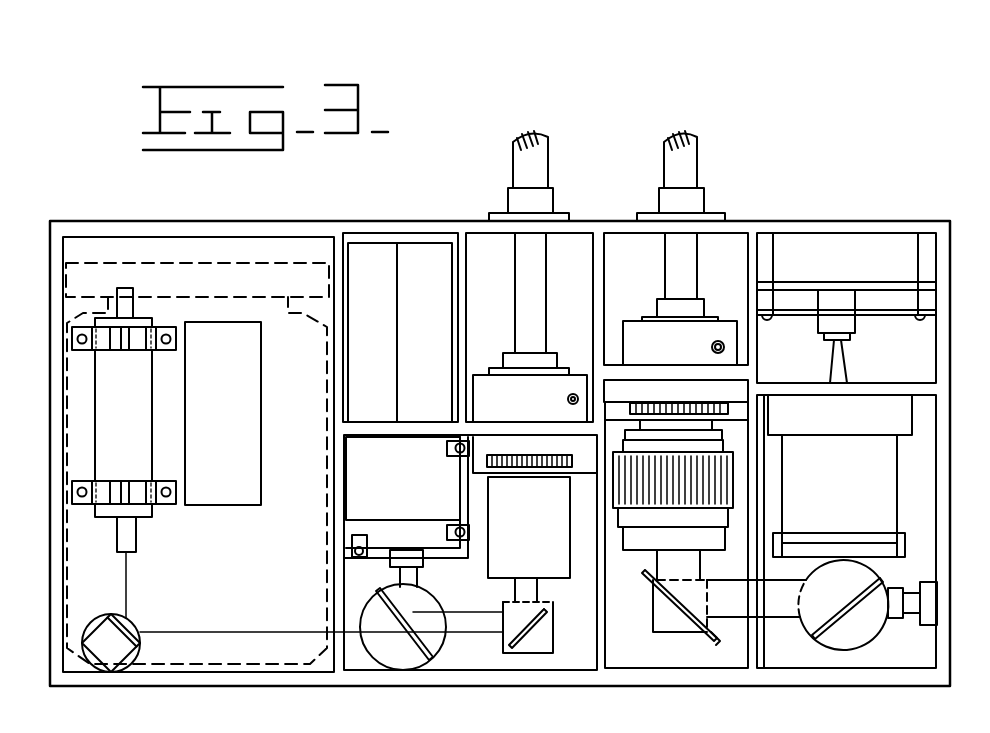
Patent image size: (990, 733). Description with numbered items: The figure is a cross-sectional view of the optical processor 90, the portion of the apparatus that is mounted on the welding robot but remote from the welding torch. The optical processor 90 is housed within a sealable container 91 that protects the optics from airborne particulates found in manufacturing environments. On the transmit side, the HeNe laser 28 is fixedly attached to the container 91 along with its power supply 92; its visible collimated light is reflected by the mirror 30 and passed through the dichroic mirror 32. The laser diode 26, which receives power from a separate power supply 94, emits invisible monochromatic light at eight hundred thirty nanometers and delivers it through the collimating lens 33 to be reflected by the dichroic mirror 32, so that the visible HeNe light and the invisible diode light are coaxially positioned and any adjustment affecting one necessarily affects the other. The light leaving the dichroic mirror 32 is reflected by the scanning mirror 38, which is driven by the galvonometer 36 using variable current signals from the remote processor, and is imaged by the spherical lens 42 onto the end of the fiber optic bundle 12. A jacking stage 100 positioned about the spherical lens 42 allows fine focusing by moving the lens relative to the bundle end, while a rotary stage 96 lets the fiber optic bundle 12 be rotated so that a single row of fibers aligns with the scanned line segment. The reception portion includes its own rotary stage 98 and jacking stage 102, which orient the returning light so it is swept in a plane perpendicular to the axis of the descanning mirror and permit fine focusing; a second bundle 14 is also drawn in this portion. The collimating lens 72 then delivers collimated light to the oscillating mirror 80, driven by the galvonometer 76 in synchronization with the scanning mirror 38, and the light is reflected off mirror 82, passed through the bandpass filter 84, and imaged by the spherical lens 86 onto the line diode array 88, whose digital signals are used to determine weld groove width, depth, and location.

The optical processor 90 is at (271, 206).
The sealable container 91 is at (65, 228).
The HeNe laser 28 is at (140, 424).
The power supply 92 is at (236, 426).
The mirror 30 is at (117, 617).
The power supply 94 is at (441, 332).
The fiber optic bundle 12 is at (543, 329).
The rotary stage 96 is at (540, 414).
The second laser 14 is at (681, 215).
The rotary stage 98 is at (684, 359).
The jacking stage 102 is at (732, 388).
The line diode array 88 is at (840, 341).
The spherical lens 86 is at (849, 489).
The bandpass filter 84 is at (883, 543).
The collimating lens 72 is at (710, 517).
The galvonometer 76 is at (667, 620).
The oscillating mirror 80 is at (716, 641).
The mirror 82 is at (822, 641).
The laser diode 26 is at (421, 507).
The collimating lens 33 is at (360, 524).
The jacking stage 100 is at (487, 448).
The spherical lens 42 is at (545, 537).
The scanning mirror 38 is at (545, 614).
The galvonometer 36 is at (545, 642).
The dichroic mirror 32 is at (427, 652).